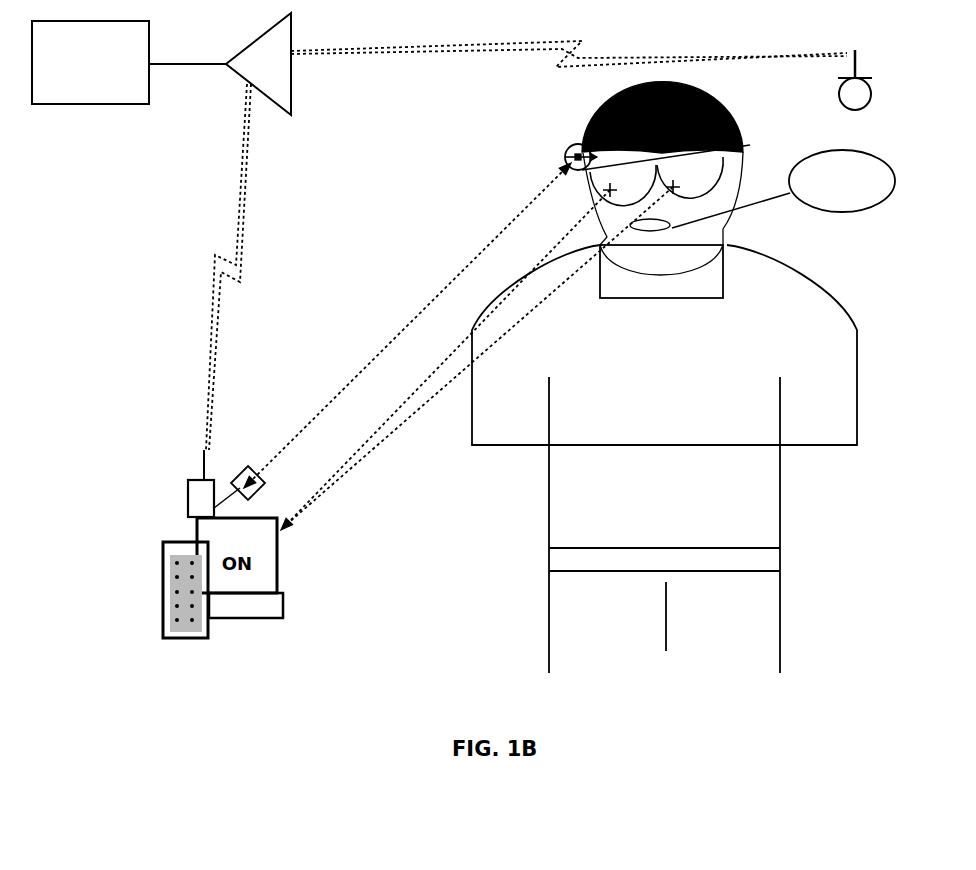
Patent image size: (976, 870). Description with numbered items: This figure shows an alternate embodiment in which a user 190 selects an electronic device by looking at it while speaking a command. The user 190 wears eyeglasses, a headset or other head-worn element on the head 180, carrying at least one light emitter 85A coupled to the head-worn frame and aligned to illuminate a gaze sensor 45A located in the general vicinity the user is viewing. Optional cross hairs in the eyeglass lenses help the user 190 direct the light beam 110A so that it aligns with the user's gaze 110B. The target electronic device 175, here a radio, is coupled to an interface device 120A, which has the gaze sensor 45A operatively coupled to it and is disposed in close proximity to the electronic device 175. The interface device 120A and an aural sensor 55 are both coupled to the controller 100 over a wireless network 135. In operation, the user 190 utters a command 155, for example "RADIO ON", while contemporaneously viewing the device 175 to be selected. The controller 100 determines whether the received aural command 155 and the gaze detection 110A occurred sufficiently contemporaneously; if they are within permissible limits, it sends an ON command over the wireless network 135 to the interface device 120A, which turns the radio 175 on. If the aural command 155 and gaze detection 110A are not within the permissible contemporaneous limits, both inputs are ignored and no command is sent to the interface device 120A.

The controller 100 is at (90, 62).
The wireless network 135 is at (456, 52).
The aural sensor 55 is at (862, 107).
The head of user 180 is at (745, 135).
The light emitter 85A is at (566, 152).
The aural command 155 is at (848, 212).
The user 190 is at (664, 459).
The light beam 110A is at (407, 325).
The user's gaze 110B is at (477, 358).
The gaze sensor 45A is at (240, 478).
The interface device 120A is at (188, 497).
The electronic device 175 is at (180, 640).